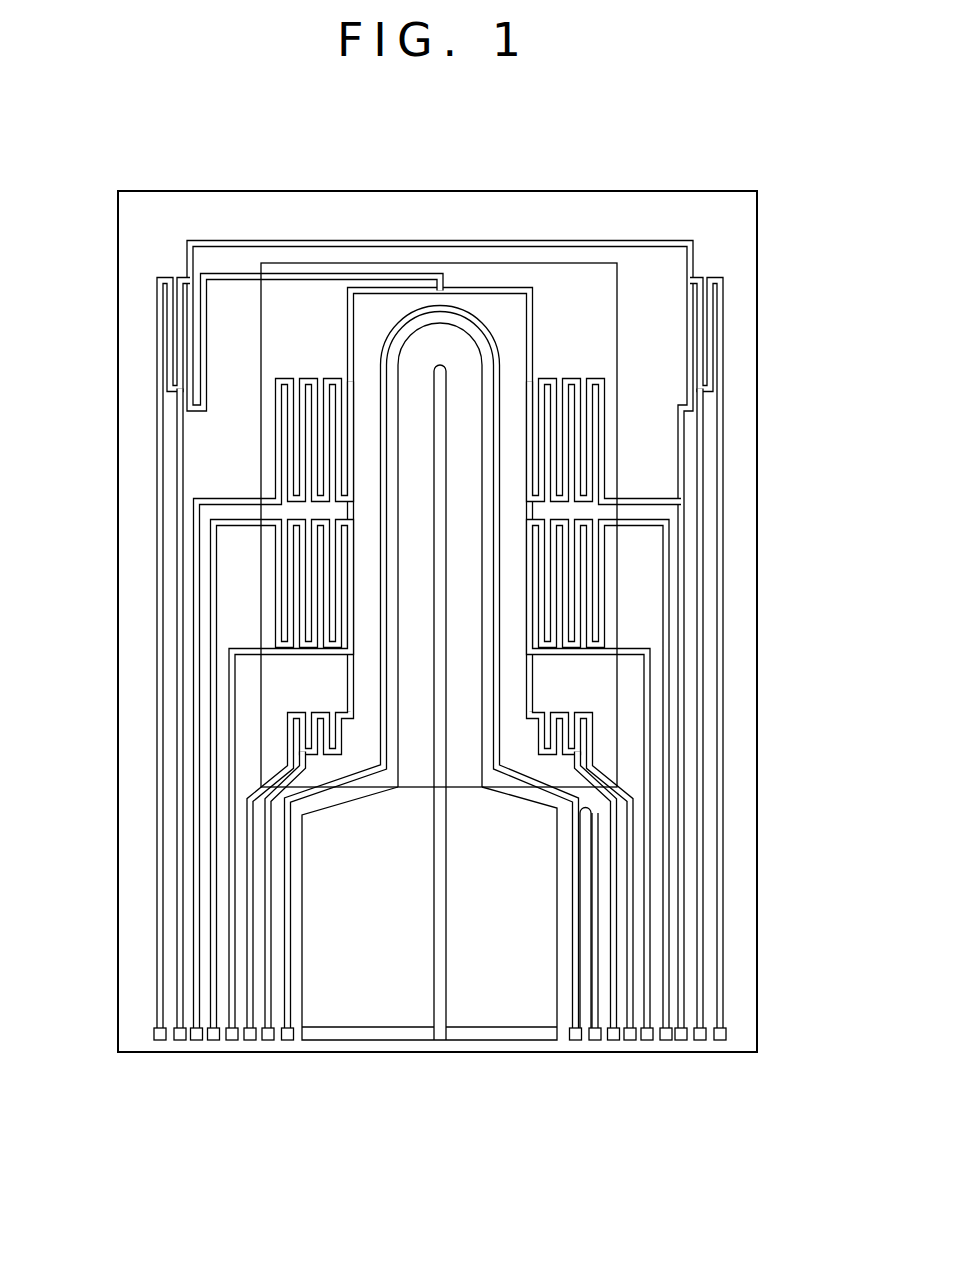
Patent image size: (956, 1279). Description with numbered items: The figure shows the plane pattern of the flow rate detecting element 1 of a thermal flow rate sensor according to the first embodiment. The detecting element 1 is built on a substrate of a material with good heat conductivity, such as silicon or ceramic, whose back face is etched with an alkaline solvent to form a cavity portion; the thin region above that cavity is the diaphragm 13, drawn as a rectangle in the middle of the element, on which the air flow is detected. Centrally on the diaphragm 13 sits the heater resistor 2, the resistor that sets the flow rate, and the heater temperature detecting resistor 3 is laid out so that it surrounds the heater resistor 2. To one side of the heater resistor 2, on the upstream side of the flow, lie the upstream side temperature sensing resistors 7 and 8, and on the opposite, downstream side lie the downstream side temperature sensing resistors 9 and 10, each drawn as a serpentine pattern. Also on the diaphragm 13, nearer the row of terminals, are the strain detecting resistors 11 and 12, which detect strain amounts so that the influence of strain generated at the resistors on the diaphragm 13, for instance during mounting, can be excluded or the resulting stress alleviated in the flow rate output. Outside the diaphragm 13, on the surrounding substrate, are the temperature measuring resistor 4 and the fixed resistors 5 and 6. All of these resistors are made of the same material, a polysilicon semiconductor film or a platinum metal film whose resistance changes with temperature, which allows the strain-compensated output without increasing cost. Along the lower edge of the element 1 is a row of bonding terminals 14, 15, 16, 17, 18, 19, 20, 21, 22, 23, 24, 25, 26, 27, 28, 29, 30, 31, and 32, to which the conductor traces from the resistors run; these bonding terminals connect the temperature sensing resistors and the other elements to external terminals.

The detecting element 1 is at (663, 215).
The heater resistor 2 is at (433, 330).
The heater temperature detecting resistor 3 is at (378, 335).
The temperature measuring resistor 4 is at (157, 280).
The fixed resistor 5 is at (723, 280).
The fixed resistor 6 is at (575, 905).
The upstream side temperature sensing resistor 7 is at (283, 438).
The upstream side temperature sensing resistor 8 is at (283, 605).
The downstream side temperature sensing resistor 9 is at (595, 442).
The downstream side temperature sensing resistor 10 is at (595, 590).
The strain detecting resistor 11 is at (287, 720).
The strain detecting resistor 12 is at (570, 712).
The diaphragm 13 is at (530, 263).
The bonding terminal 14 is at (160, 1040).
The bonding terminal 15 is at (180, 1040).
The bonding terminal 16 is at (196, 1040).
The bonding terminal 17 is at (214, 1040).
The bonding terminal 18 is at (232, 1040).
The bonding terminal 19 is at (250, 1040).
The bonding terminal 20 is at (268, 1040).
The bonding terminal 21 is at (288, 1040).
The bonding terminal 22 is at (388, 1040).
The bonding terminal 23 is at (468, 1040).
The bonding terminal 24 is at (576, 1040).
The bonding terminal 25 is at (595, 1040).
The bonding terminal 26 is at (614, 1040).
The bonding terminal 27 is at (630, 1040).
The bonding terminal 28 is at (647, 1040).
The bonding terminal 29 is at (666, 1040).
The bonding terminal 30 is at (681, 1040).
The bonding terminal 31 is at (700, 1040).
The bonding terminal 32 is at (720, 1040).